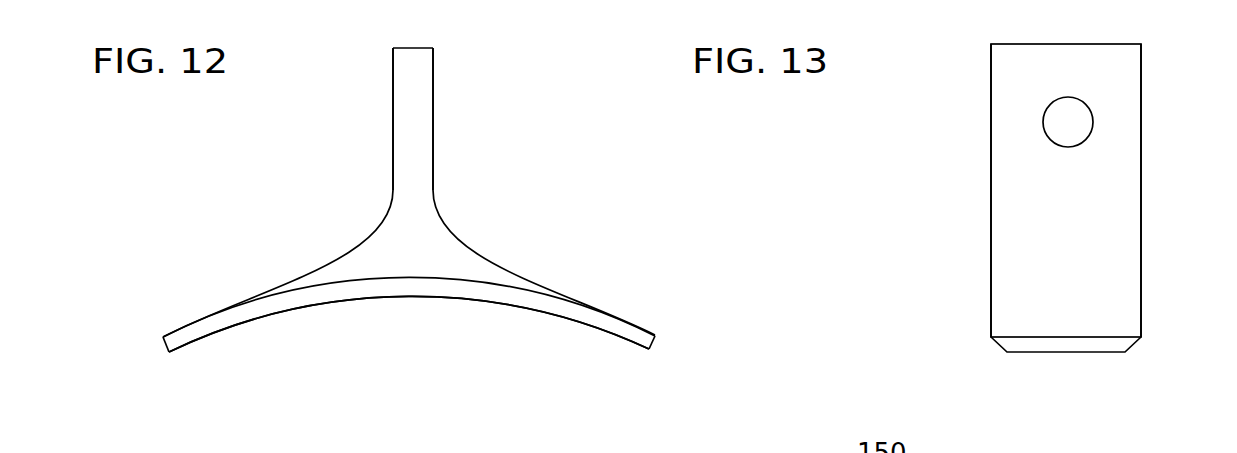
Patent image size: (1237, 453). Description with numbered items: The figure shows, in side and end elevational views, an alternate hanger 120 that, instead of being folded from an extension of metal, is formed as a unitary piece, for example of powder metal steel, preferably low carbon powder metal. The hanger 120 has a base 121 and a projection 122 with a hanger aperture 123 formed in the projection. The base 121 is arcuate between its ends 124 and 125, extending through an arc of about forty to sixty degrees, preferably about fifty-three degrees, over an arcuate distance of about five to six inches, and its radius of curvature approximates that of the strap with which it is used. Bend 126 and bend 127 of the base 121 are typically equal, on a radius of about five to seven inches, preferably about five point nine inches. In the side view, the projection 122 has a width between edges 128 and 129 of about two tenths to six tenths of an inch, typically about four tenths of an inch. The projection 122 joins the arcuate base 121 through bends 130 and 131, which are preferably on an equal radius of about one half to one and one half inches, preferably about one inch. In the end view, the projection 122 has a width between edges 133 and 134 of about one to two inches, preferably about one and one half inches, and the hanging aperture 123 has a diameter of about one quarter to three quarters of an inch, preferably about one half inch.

In FIG. 12, the hanger 120 is at (244, 223).
In FIG. 13, the hanger 120 is at (972, 78).
In FIG. 12, the base 121 is at (563, 319).
In FIG. 13, the base 121 is at (1070, 345).
In FIG. 12, the projection 122 is at (433, 82).
In FIG. 13, the projection 122 is at (990, 90).
In FIG. 13, the hanger aperture 123 is at (1047, 128).
In FIG. 12, the end 124 is at (160, 350).
In FIG. 12, the end 125 is at (657, 345).
In FIG. 12, the bend 126 is at (327, 303).
In FIG. 12, the bend 127 is at (477, 301).
In FIG. 12, the edge 128 is at (393, 116).
In FIG. 12, the edge 129 is at (433, 140).
In FIG. 12, the bend 130 is at (460, 241).
In FIG. 12, the bend 131 is at (355, 262).
In FIG. 13, the edge 133 is at (991, 230).
In FIG. 13, the edge 134 is at (1141, 222).